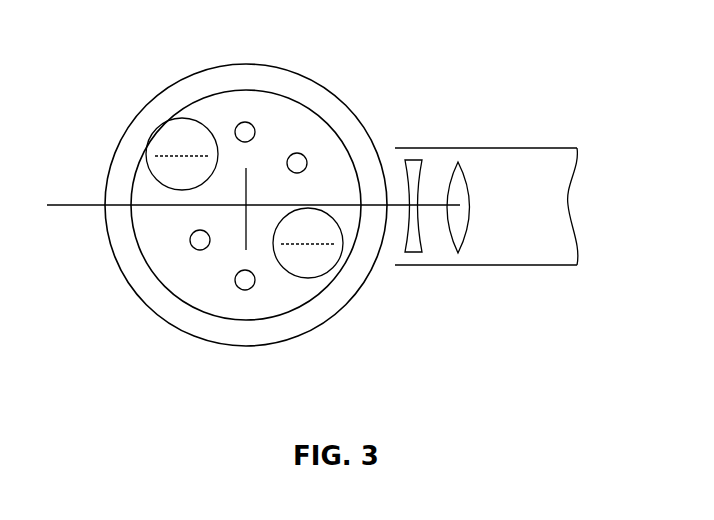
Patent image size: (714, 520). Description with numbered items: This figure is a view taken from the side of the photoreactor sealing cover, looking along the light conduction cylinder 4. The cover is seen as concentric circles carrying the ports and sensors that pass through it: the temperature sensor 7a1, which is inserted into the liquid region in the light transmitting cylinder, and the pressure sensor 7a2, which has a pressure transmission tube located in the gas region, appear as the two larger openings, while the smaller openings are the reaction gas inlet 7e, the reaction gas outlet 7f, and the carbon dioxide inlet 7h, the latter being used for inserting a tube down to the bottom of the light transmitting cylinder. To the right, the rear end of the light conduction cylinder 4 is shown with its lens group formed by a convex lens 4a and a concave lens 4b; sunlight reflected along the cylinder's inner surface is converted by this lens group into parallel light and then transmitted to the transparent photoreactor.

The light conduction cylinder 4 is at (528, 142).
The convex lens 4a is at (509, 165).
The concave lens 4b is at (420, 165).
The temperature sensor 7a1 is at (182, 154).
The pressure sensor 7a2 is at (308, 243).
The reaction gas inlet 7e is at (305, 156).
The reaction gas outlet 7f is at (192, 247).
The carbon dioxide inlet 7h is at (252, 125).